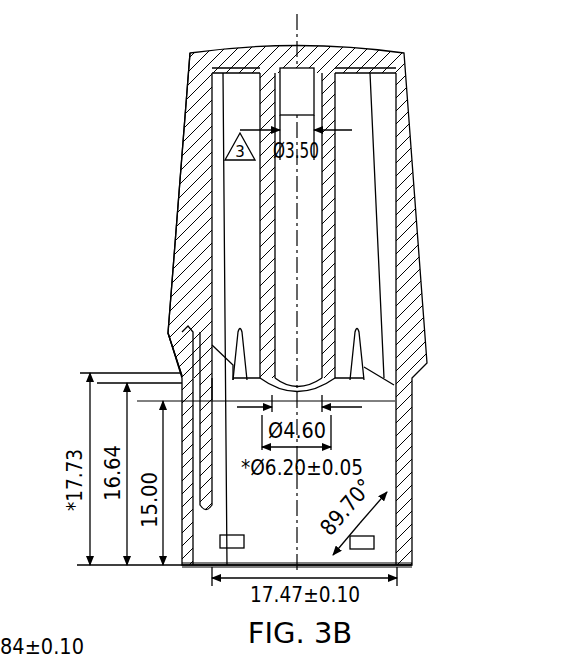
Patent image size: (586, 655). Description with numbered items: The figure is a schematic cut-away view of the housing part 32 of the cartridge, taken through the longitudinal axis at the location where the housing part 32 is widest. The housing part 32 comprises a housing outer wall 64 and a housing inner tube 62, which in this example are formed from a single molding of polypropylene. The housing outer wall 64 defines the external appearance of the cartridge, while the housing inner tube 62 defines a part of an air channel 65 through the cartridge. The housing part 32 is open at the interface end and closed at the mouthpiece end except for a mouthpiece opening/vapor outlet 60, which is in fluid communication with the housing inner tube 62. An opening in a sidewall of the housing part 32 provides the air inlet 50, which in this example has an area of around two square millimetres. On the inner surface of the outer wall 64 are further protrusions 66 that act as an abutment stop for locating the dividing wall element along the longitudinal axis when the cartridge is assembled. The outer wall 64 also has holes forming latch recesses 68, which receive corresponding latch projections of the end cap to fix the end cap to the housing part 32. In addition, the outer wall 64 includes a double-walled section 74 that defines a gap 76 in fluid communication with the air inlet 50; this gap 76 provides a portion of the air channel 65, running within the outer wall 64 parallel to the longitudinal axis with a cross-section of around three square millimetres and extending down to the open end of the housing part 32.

The housing part 32 is at (437, 247).
The air inlet 50 is at (180, 480).
The mouthpiece opening/vapor outlet 60 is at (302, 53).
The housing inner tube 62 is at (333, 200).
The housing outer wall 64 is at (176, 270).
The air channel 65 is at (183, 372).
The protrusions 66 is at (240, 326).
The latch recesses 68 is at (244, 539).
The double-walled section 74 is at (213, 577).
The gap 76 is at (210, 512).